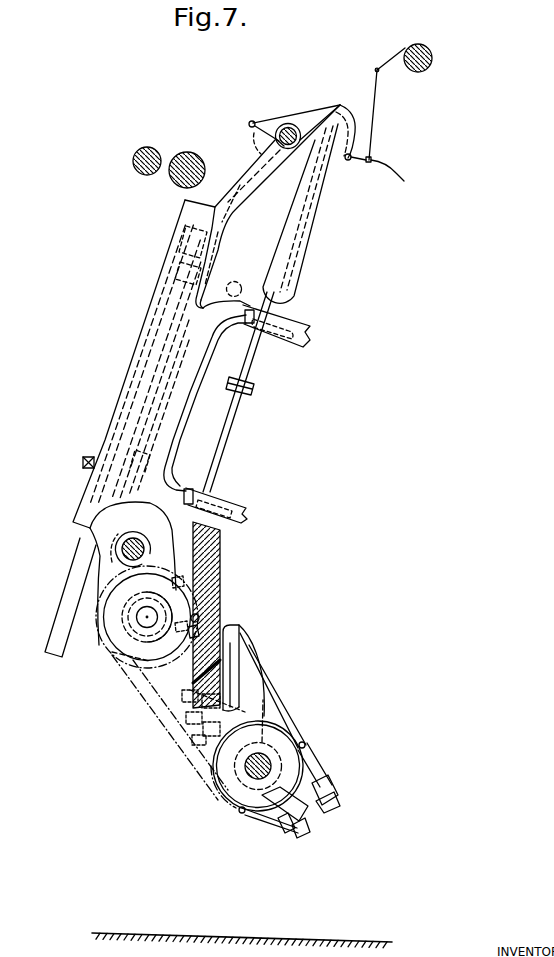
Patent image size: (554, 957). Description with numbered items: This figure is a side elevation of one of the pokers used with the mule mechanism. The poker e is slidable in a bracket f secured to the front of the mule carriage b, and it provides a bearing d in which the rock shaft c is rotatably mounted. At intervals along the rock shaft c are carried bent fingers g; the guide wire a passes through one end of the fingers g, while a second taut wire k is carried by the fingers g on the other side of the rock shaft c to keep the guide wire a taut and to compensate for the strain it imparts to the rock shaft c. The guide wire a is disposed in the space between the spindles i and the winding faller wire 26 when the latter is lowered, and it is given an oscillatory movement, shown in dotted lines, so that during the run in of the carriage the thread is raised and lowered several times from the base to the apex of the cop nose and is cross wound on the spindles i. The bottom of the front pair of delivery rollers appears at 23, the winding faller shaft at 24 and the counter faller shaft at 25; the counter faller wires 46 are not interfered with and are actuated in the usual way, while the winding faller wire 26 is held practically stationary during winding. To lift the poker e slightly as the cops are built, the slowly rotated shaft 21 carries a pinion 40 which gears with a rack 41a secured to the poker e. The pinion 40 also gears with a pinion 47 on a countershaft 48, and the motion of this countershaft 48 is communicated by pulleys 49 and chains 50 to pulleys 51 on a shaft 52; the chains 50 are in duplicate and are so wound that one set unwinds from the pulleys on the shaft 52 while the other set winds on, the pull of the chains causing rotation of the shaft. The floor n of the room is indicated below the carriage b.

The bottom front delivery roller 23 is at (432, 58).
The winding faller shaft 24 is at (185, 152).
The counter faller shaft 25 is at (132, 161).
The counter faller wires 46 is at (379, 73).
The winding faller wire 26 is at (387, 174).
The bent fingers g is at (329, 103).
The taut wire k is at (249, 124).
The bearings d is at (288, 121).
The rock shaft c is at (276, 139).
The guide wire a is at (348, 163).
The poker e is at (240, 222).
The bracket f is at (122, 378).
The spindles i is at (273, 312).
The rack 41a is at (146, 471).
The shaft 21 is at (150, 553).
The pinion 40 is at (150, 545).
The mule carriage b is at (222, 602).
The pinion 47 is at (110, 645).
The countershaft 48 is at (153, 628).
The pulleys 49 is at (143, 654).
The chains 50 is at (162, 728).
The pulleys 51 is at (228, 788).
The shaft 52 is at (272, 764).
The floor n is at (270, 930).